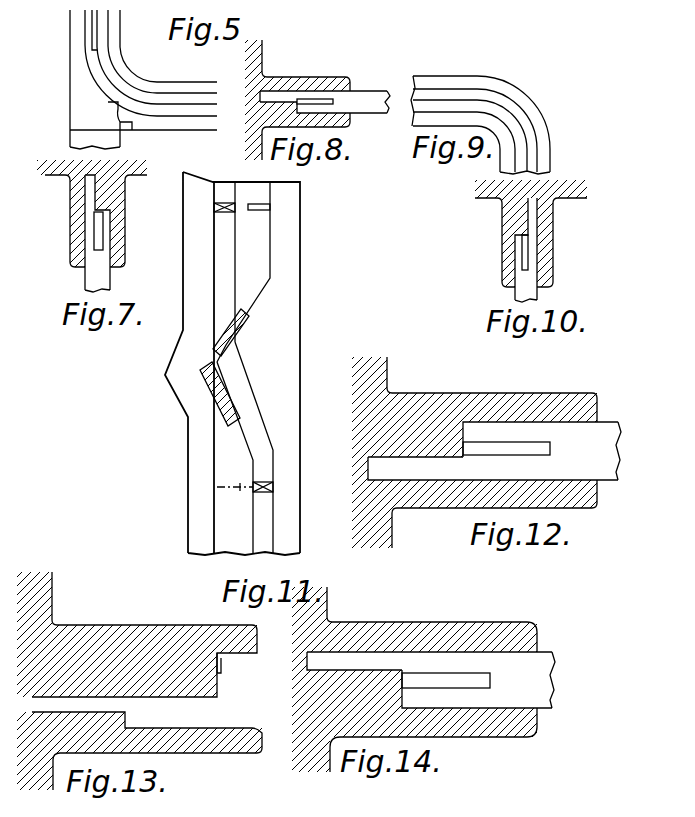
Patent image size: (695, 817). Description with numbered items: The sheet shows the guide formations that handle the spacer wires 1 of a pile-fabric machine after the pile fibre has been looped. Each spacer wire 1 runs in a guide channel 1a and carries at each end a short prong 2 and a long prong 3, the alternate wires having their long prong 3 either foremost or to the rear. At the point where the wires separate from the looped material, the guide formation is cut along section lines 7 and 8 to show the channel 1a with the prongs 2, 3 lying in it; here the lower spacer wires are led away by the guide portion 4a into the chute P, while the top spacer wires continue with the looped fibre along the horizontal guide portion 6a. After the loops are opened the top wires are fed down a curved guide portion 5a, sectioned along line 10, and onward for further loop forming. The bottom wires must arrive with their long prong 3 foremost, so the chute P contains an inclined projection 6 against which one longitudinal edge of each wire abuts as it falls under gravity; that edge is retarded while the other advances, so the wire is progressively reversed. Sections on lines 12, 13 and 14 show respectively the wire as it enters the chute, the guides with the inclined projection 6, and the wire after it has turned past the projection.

In FIG. 12, the spacer wire 1 is at (597, 427).
In FIG. 14, the spacer wire 1 is at (532, 660).
In FIG. 5, the guide channel 1a is at (108, 52).
In FIG. 8, the guide channel 1a is at (322, 80).
In FIG. 7, the guide channel 1a is at (115, 231).
In FIG. 10, the guide channel 1a is at (508, 213).
In FIG. 11, the guide channel 1a is at (300, 430).
In FIG. 12, the guide channel 1a is at (553, 398).
In FIG. 13, the guide channel 1a is at (175, 663).
In FIG. 14, the guide channel 1a is at (472, 638).
In FIG. 8, the short prong 2 is at (313, 108).
In FIG. 7, the short prong 2 is at (102, 214).
In FIG. 10, the short prong 2 is at (520, 247).
In FIG. 11, the short prong 2 is at (270, 210).
In FIG. 12, the short prong 2 is at (517, 427).
In FIG. 14, the short prong 2 is at (437, 697).
In FIG. 8, the long prong 3 is at (283, 97).
In FIG. 7, the long prong 3 is at (88, 203).
In FIG. 10, the long prong 3 is at (540, 219).
In FIG. 11, the long prong 3 is at (212, 214).
In FIG. 12, the long prong 3 is at (417, 472).
In FIG. 14, the long prong 3 is at (372, 660).
In FIG. 5, the guide portion 4a is at (92, 113).
In FIG. 7, the guide portion 4a is at (98, 218).
In FIG. 9, the guide portion 5a is at (520, 137).
In FIG. 10, the guide portion 5a is at (527, 245).
In FIG. 5, the inclined projection 6 is at (135, 27).
In FIG. 11, the inclined projection 6 is at (232, 330).
In FIG. 13, the inclined projection 6 is at (220, 673).
In FIG. 5, the horizontal guide portion 6a is at (158, 108).
In FIG. 8, the horizontal guide portion 6a is at (298, 101).
In FIG. 5, the section line 7— 7 is at (130, 133).
In FIG. 5, the section line 8— 8 is at (198, 138).
In FIG. 9, the section line 10— 10 is at (560, 158).
In FIG. 11, the section line 12— 12 is at (330, 207).
In FIG. 11, the section line 13— 13 is at (330, 370).
In FIG. 11, the section line 14— 14 is at (330, 535).